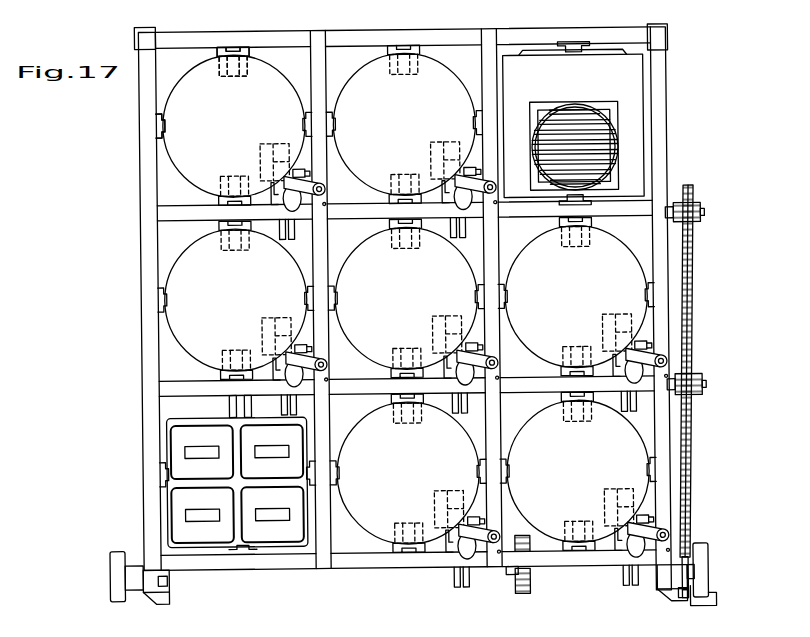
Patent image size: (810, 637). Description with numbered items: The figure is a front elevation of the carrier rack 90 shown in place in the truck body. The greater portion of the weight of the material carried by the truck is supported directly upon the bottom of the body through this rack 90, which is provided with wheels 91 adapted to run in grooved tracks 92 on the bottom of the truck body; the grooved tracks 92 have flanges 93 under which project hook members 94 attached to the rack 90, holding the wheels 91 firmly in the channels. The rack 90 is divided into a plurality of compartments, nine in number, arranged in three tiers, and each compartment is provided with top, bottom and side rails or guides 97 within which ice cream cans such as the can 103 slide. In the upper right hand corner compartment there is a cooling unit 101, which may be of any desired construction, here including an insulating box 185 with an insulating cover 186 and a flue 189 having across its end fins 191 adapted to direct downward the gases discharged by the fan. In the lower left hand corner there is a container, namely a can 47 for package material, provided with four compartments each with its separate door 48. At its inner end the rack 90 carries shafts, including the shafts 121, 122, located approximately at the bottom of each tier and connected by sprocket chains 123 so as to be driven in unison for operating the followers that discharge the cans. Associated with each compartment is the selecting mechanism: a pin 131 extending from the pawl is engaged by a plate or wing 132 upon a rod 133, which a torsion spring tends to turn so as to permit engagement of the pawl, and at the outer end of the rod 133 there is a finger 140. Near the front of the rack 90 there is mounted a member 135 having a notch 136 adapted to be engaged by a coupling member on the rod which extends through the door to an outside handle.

The can 47 is at (202, 498).
The door 48 is at (182, 452).
The rack 90 is at (656, 110).
The wheels 91 is at (112, 563).
The grooved tracks 92 is at (706, 596).
The flanges 93 is at (678, 601).
The hook members 94 is at (674, 602).
The rails or guides 97 is at (232, 48).
The cooling unit 101 is at (634, 90).
The ice cream can 103 is at (188, 339).
The shaft 121 is at (699, 392).
The shaft 122 is at (701, 220).
The sprocket chains 123 is at (687, 322).
The pin 131 is at (481, 548).
The plate or wing 132 is at (487, 373).
The rod 133 is at (318, 372).
The member 135 is at (472, 555).
The notch 136 is at (457, 568).
The finger 140 is at (330, 192).
The insulating box 185 is at (646, 180).
The insulating cover 186 is at (609, 104).
The flue 189 is at (599, 118).
The fins 191 is at (582, 84).